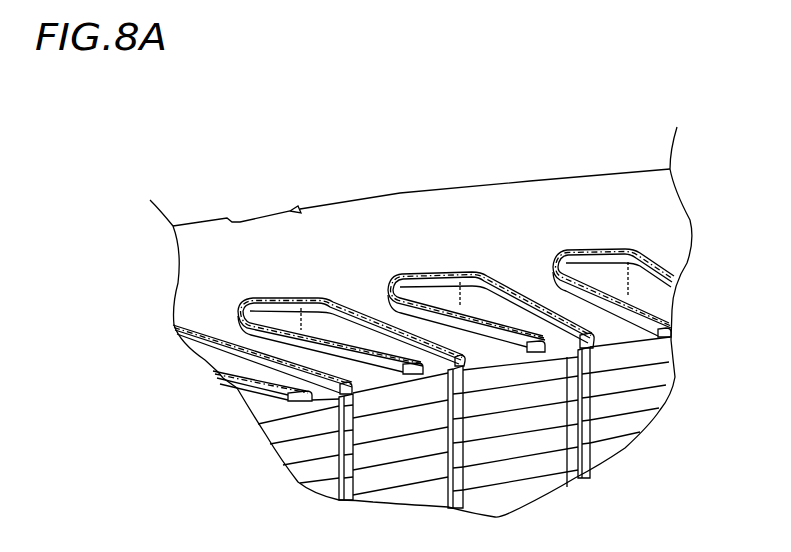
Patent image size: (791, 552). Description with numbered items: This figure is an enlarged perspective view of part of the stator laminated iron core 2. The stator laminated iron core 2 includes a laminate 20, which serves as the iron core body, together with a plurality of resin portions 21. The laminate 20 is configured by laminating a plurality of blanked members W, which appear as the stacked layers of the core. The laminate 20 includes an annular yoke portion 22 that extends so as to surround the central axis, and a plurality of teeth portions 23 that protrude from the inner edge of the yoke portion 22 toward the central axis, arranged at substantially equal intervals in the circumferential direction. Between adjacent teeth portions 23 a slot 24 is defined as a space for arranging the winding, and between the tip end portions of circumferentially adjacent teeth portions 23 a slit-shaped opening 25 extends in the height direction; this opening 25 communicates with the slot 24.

The stator laminated iron core 2 is at (268, 128).
The laminate 20 is at (622, 131).
The resin portion 21 is at (305, 294).
The yoke portion 22 is at (528, 188).
The teeth portion 23 is at (620, 329).
The slot 24 is at (283, 312).
The opening 25 is at (354, 474).
The blanked member W is at (527, 467).